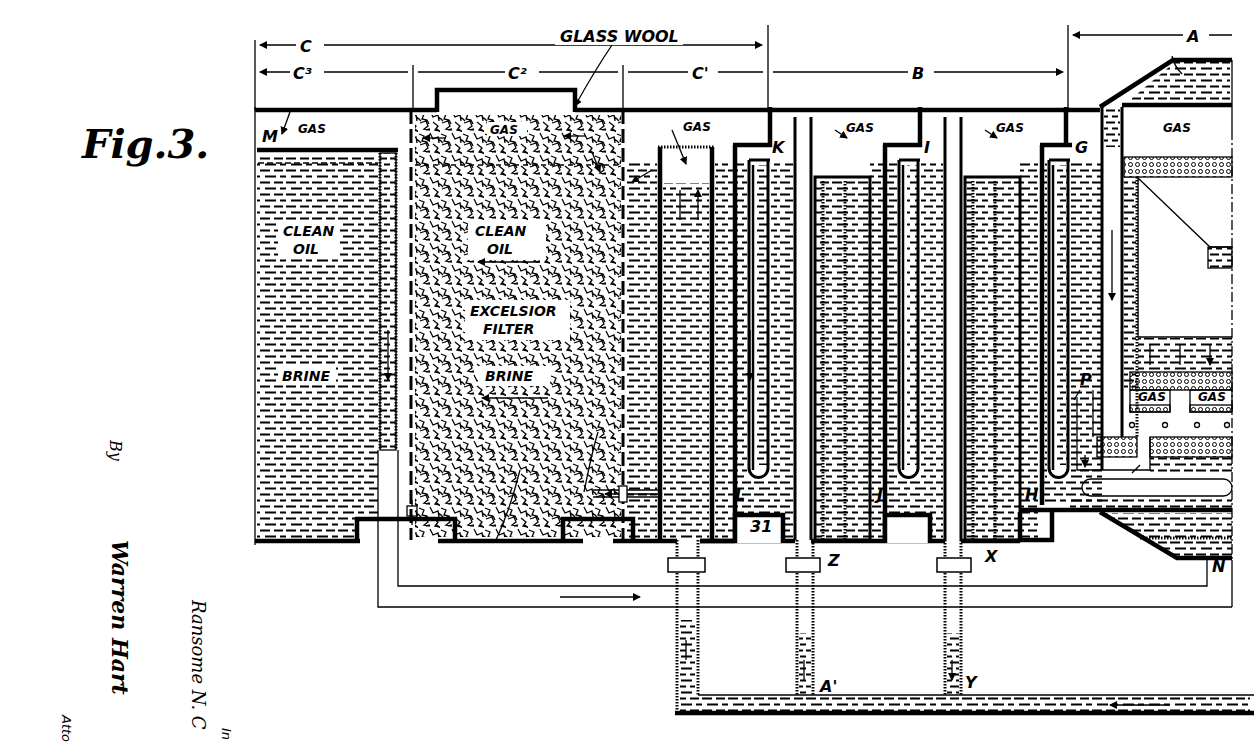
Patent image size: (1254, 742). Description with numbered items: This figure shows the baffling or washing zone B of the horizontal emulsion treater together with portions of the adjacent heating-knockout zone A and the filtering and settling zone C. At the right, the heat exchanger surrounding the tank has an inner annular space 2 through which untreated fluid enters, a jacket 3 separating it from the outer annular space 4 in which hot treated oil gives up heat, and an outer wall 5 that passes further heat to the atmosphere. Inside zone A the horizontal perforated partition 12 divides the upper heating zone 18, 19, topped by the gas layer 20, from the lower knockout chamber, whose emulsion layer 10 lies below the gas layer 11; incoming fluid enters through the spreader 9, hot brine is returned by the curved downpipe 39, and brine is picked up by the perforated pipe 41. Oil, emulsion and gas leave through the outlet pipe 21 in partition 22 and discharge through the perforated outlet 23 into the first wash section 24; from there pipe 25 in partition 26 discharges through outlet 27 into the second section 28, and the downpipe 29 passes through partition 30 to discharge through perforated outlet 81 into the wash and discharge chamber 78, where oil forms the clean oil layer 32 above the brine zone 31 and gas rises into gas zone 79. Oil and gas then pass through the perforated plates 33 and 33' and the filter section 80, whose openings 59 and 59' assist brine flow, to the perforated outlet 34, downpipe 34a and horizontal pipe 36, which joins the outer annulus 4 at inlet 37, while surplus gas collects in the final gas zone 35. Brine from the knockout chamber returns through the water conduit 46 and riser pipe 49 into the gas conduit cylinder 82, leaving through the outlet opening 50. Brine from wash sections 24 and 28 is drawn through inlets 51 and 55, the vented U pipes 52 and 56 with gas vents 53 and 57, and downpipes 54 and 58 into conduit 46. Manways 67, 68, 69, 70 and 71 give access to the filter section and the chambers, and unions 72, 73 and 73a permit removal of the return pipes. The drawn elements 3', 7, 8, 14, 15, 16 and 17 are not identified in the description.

The inner annular space 2 is at (1131, 84).
The jacket 3 is at (1177, 72).
The bottom wall 3' is at (1166, 543).
The outer annular space 4 is at (1156, 66).
The outer jacket wall 5 is at (1160, 610).
The partition wall 7 is at (1100, 102).
The downcomer pipe 8 is at (1122, 296).
The spreader 9 is at (1180, 427).
The emulsion layer 10 is at (1163, 468).
The gas layer 11 is at (1128, 422).
The horizontal perforated partition 12 is at (1130, 392).
The perforated plate 14 is at (1189, 372).
The perforated plate 15 is at (1158, 372).
The perforated plate 16 is at (1220, 372).
The hopper 17 is at (1185, 257).
The heating zone 18 is at (1226, 268).
The heating zone 19 is at (1144, 156).
The gas layer 20 is at (1209, 146).
The outlet pipe 21 is at (1032, 146).
The partition 22 is at (1060, 108).
The perforated outlet 23 is at (1048, 526).
The first section of washing zone 24 is at (1032, 508).
The pipe 25 is at (882, 146).
The partition 26 is at (920, 108).
The outlet 27 is at (832, 529).
The second section of washing zone 28 is at (874, 508).
The downpipe 29 is at (732, 146).
The partition 30 is at (768, 108).
The brine zone 31 is at (500, 521).
The clean oil zone 32 is at (591, 154).
The porous plate 33 is at (640, 314).
The porous plate 33' is at (394, 314).
The perforated outlet pipe 34 is at (356, 149).
The downpipe 34a is at (378, 579).
The final gas zone 35 is at (286, 111).
The horizontal pipe 36 is at (1076, 590).
The inlet connection 37 is at (1189, 594).
The curved return downpipe 39 is at (1094, 516).
The brine pickup pipe 41 is at (1187, 486).
The water conduit 46 is at (1126, 698).
The riser pipe 49 is at (678, 672).
The outlet opening 50 is at (654, 530).
The inlet pipe 51 is at (1004, 180).
The inverted U pipe 52 is at (974, 166).
The gas vent 53 is at (950, 120).
The downpipe 54 is at (938, 560).
The inlet pipe 55 is at (860, 180).
The inverted U pipe connection 56 is at (828, 178).
The gas vent 57 is at (798, 120).
The downpipe 58 is at (788, 562).
The discharge opening 59 is at (598, 545).
The discharge opening 59' is at (418, 535).
The manway 67 is at (285, 546).
The manway 68 is at (500, 92).
The lower manway 69 is at (660, 546).
The lower manway 70 is at (780, 544).
The lower manway 71 is at (1044, 542).
The union 72 is at (677, 570).
The union 73 is at (810, 572).
The union 73a is at (962, 572).
The wash and discharge zone chamber 78 is at (630, 426).
The gas zone 79 is at (679, 329).
The filter section 80 is at (563, 462).
The perforated outlet 81 is at (731, 520).
The gas conduit cylinder 82 is at (640, 159).